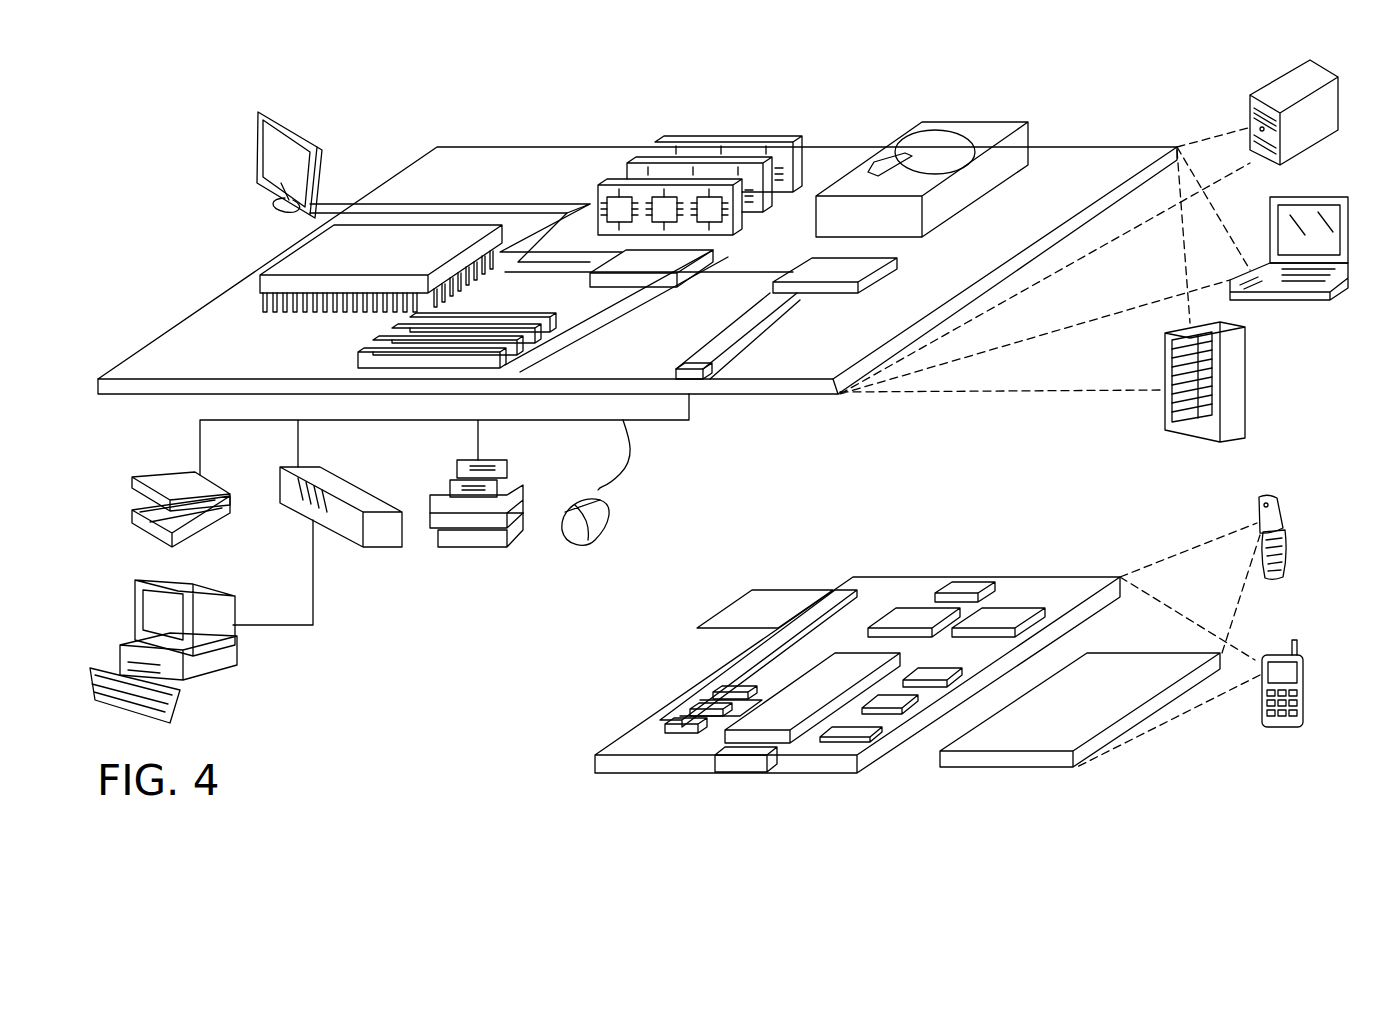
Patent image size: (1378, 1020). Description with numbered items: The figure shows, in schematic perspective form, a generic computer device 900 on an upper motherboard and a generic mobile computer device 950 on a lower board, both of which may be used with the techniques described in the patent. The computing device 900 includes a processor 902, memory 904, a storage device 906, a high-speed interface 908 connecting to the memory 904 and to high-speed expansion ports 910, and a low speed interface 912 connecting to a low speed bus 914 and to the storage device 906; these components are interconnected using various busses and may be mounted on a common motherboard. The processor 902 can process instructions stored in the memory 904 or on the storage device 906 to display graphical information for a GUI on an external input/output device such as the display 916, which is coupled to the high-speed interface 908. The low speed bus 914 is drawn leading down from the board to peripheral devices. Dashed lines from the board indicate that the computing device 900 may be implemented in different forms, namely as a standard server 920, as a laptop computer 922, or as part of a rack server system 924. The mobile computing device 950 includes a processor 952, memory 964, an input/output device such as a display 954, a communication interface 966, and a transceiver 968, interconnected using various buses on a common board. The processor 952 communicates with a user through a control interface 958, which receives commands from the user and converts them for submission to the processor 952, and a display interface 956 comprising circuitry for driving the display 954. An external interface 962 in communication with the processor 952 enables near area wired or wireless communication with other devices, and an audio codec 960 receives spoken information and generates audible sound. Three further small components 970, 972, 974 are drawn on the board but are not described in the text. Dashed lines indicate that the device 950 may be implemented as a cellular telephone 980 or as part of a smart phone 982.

The generic computer device 900 is at (392, 95).
The processor 902 is at (288, 254).
The memory 904 is at (732, 140).
The storage device 906 is at (965, 122).
The high-speed interface 908 is at (665, 260).
The high-speed expansion ports 910 is at (387, 337).
The low speed interface 912 is at (808, 265).
The low speed bus 914 is at (697, 357).
The display 916 is at (262, 112).
The standard server 920 is at (1272, 88).
The laptop computer 922 is at (1325, 197).
The rack server system 924 is at (1247, 383).
The generic mobile computer device 950 is at (553, 777).
The processor 952 is at (780, 702).
The display 954 is at (1121, 668).
The display interface 956 is at (860, 727).
The control interface 958 is at (897, 702).
The audio codec 960 is at (935, 667).
The external interface 962 is at (741, 757).
The memory 964 is at (697, 705).
The communication interface 966 is at (913, 608).
The transceiver 968 is at (1007, 610).
The chip 970 is at (967, 588).
The slot 972 is at (838, 590).
The pad 974 is at (753, 590).
The cellular telephone 980 is at (1263, 497).
The smart phone 982 is at (1278, 655).